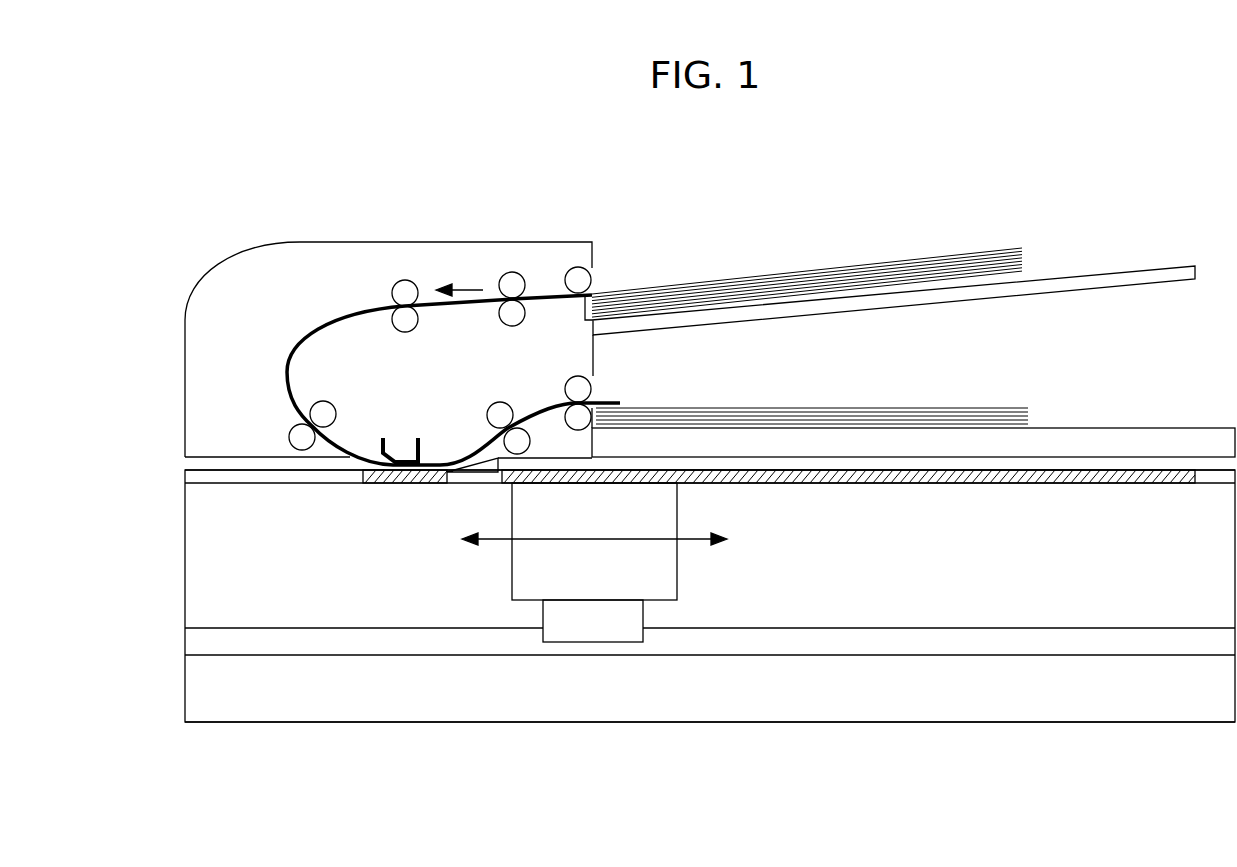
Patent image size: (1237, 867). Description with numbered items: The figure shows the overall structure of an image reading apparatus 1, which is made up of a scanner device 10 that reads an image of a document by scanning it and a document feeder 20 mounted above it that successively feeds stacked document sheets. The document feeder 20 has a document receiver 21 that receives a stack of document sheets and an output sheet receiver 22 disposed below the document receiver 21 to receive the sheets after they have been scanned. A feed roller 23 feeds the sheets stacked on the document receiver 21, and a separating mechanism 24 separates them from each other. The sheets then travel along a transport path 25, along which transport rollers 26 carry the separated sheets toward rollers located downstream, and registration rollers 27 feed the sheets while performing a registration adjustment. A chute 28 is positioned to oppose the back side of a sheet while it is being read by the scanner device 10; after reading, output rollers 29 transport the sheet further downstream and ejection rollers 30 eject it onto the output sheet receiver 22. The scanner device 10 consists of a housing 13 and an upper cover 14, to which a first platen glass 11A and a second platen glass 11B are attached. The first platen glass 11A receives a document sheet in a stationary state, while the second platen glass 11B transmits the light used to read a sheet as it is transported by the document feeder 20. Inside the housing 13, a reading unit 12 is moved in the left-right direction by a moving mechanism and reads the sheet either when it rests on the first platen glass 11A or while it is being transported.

The image reading apparatus 1 is at (243, 177).
The scanner device 10 is at (833, 752).
The first platen glass 11A is at (975, 485).
The second platen glass 11B is at (385, 485).
The reading unit 12 is at (688, 573).
The housing 13 is at (1108, 725).
The upper cover 14 is at (253, 485).
The document feeder 20 is at (753, 217).
The document receiver 21 is at (912, 310).
The output sheet receiver 22 is at (1128, 427).
The feed roller 23 is at (578, 266).
The separating mechanism 24 is at (510, 271).
The transport path 25 is at (330, 322).
The transport rollers 26 is at (405, 279).
The registration rollers 27 is at (296, 430).
The chute 28 is at (415, 437).
The output rollers 29 is at (497, 402).
The ejection rollers 30 is at (591, 380).